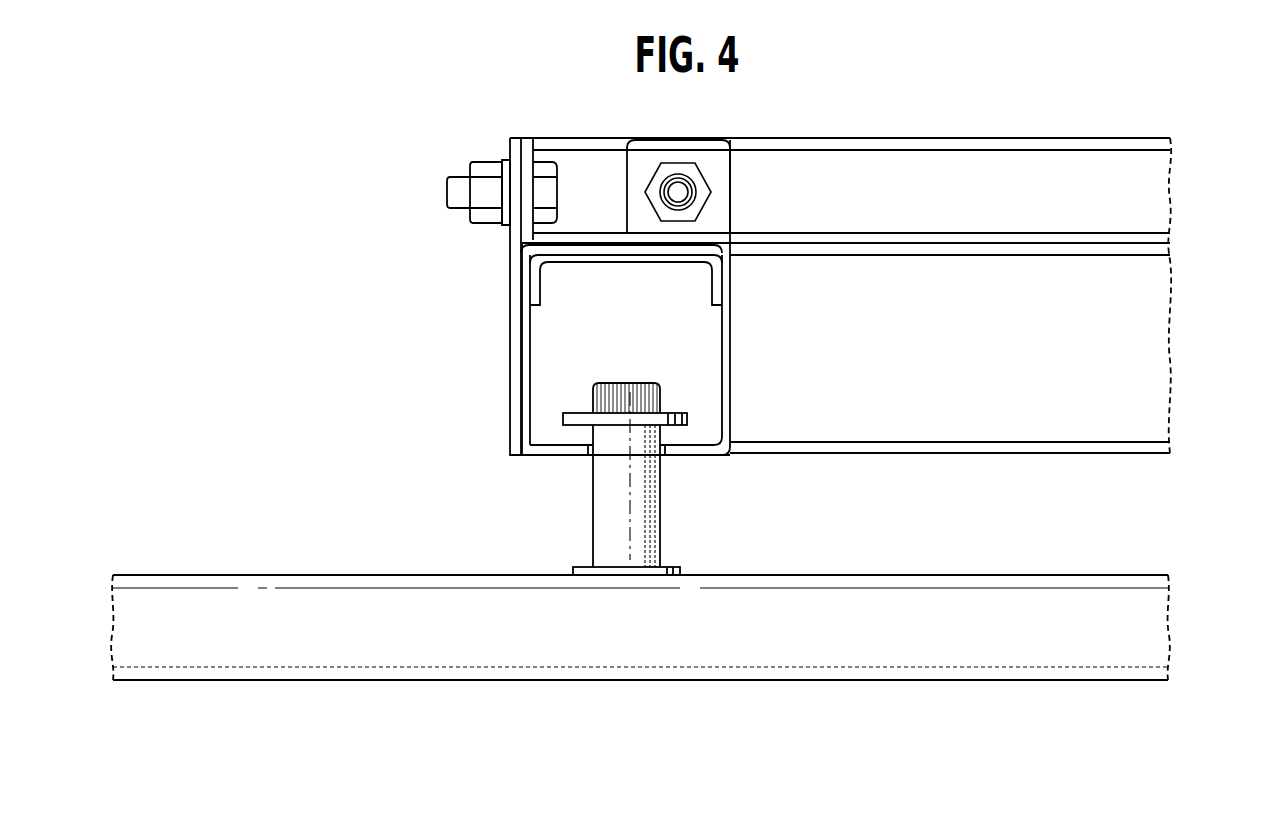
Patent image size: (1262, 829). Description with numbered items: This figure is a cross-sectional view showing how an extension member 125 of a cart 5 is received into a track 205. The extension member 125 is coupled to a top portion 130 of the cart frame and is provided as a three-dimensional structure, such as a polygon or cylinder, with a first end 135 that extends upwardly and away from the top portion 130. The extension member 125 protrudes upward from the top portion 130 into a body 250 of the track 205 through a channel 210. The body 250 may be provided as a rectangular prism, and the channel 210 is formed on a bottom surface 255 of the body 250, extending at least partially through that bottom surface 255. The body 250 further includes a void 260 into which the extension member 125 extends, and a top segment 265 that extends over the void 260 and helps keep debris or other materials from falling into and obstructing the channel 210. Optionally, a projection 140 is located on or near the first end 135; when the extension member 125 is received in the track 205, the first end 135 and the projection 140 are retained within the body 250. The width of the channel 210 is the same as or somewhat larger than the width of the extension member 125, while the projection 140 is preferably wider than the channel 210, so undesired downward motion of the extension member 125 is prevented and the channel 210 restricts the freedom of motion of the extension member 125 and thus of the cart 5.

The cart 5 is at (230, 547).
The extension member 125 is at (588, 515).
The top portion 130 is at (1122, 568).
The first end 135 is at (604, 383).
The projection 140 is at (690, 418).
The track 205 is at (1030, 128).
The channel 210 is at (666, 461).
The body 250 is at (509, 385).
The bottom surface 255 is at (548, 445).
The void 260 is at (655, 346).
The top segment 265 is at (588, 228).